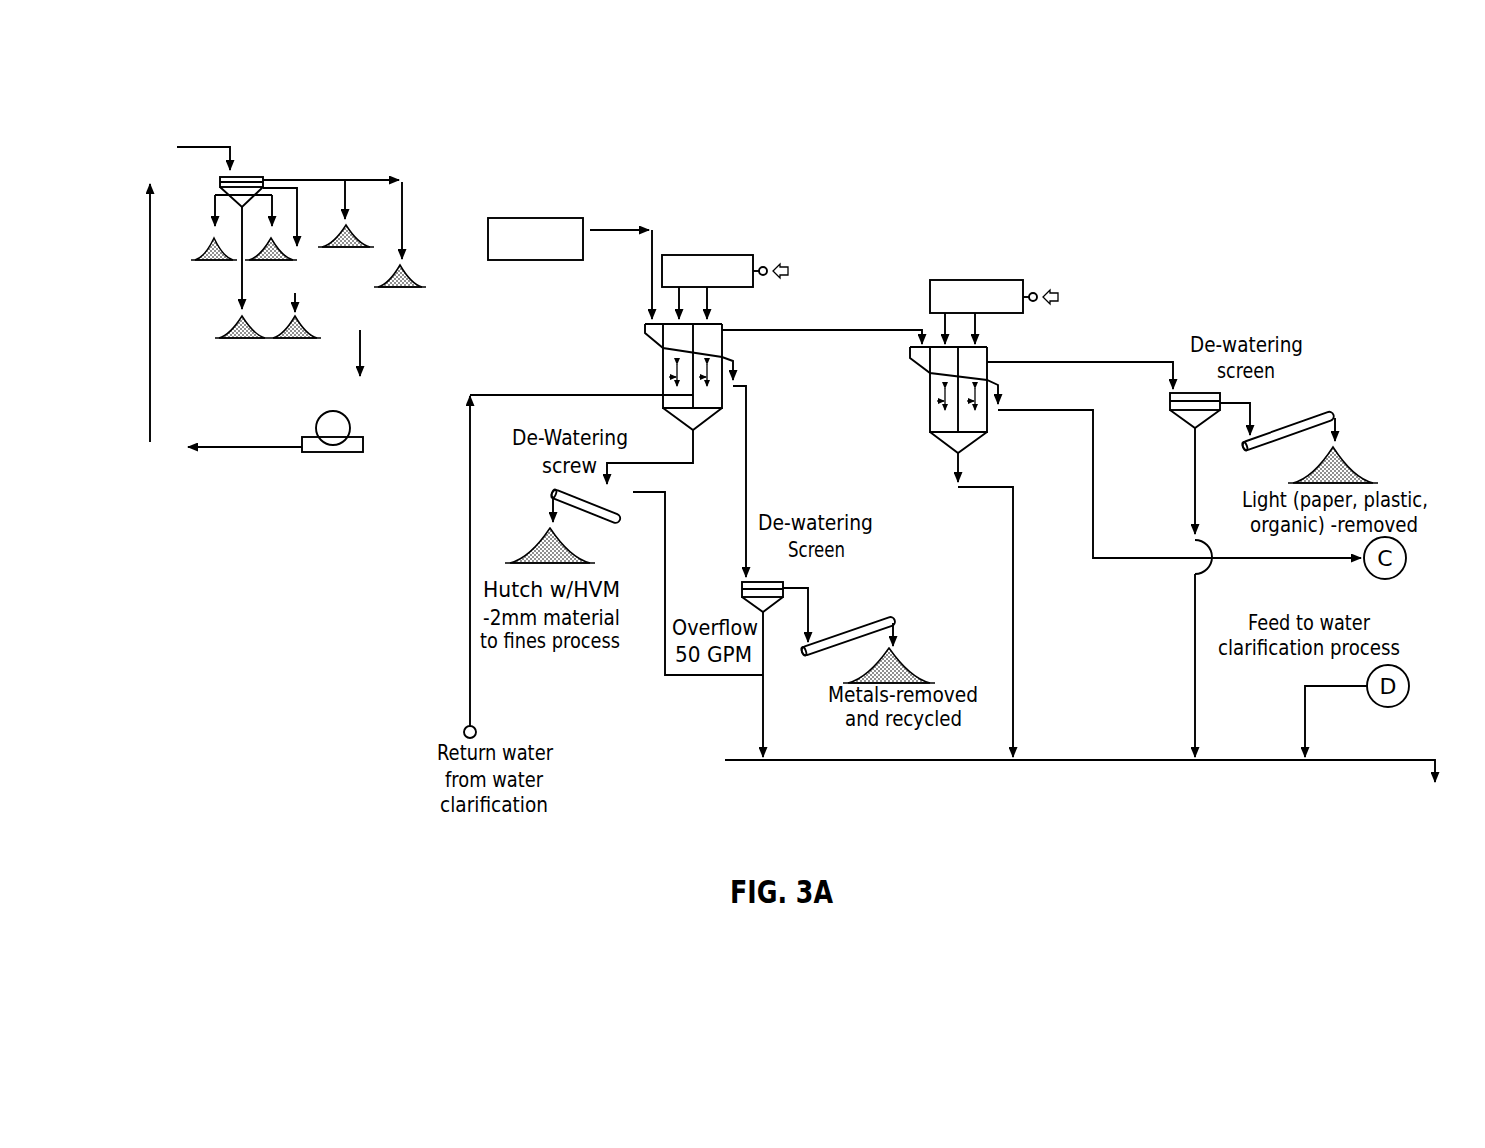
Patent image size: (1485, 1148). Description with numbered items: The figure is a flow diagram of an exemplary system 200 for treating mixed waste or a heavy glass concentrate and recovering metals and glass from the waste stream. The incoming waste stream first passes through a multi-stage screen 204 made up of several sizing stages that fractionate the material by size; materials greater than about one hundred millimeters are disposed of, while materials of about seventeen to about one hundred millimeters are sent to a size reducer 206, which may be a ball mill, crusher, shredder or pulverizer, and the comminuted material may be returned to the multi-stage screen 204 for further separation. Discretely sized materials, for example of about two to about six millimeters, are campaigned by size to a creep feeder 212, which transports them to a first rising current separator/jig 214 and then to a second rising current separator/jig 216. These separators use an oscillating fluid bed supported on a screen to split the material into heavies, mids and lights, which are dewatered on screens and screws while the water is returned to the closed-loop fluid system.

The system 200 is at (1250, 217).
The multi-stage screen 204 is at (268, 128).
The size reducer 206 is at (333, 458).
The creep feeder 212 is at (522, 217).
The first rising current separator/jig 214 is at (708, 254).
The rising current separator/jig 216 is at (987, 279).